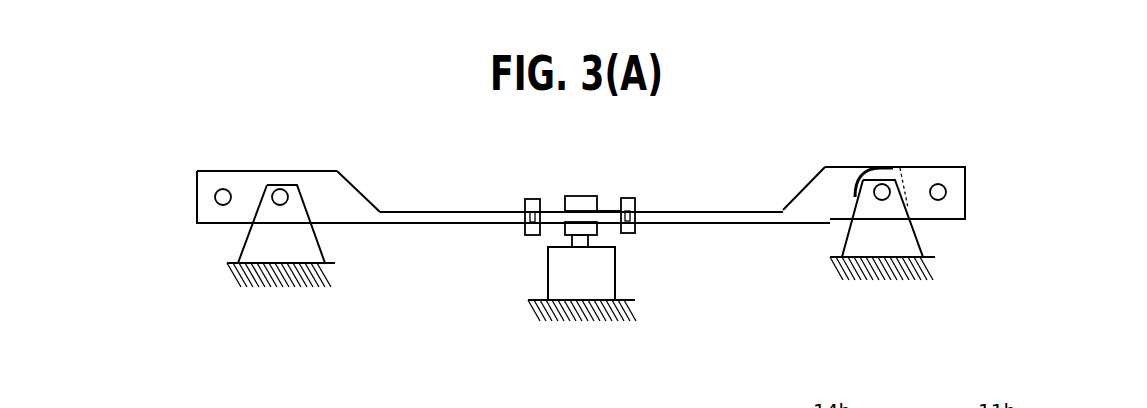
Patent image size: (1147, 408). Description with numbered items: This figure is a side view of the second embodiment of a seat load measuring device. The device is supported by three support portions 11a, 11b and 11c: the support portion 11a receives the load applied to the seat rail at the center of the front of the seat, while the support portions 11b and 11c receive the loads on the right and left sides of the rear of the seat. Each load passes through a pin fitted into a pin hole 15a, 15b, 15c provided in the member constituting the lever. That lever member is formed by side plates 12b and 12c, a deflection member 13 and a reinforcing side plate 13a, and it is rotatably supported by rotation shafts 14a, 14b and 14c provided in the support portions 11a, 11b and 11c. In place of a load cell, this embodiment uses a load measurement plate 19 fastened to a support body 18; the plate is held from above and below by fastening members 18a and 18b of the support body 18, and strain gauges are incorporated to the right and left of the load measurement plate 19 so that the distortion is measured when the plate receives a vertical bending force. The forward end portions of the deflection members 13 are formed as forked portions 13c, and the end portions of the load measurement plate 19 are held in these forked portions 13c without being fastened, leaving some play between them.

The support portion 11a is at (325, 253).
The support portion 11b is at (949, 255).
The support portion 11c is at (923, 246).
The side plate 12b is at (962, 193).
The side plate 12c is at (950, 207).
The deflection member 13 is at (487, 211).
The reinforcing side plate 13a is at (347, 193).
The forked portion 13c is at (530, 235).
The rotation shaft 14a is at (283, 189).
The rotation shaft 14b is at (934, 150).
The rotation shaft 14c is at (893, 168).
The pin hole 15a is at (223, 189).
The pin hole 15b is at (977, 167).
The pin hole 15c is at (946, 189).
The support body 18 is at (582, 218).
The fastening member 18a is at (582, 196).
The fastening member 18b is at (563, 230).
The load measurement plate 19 is at (608, 211).